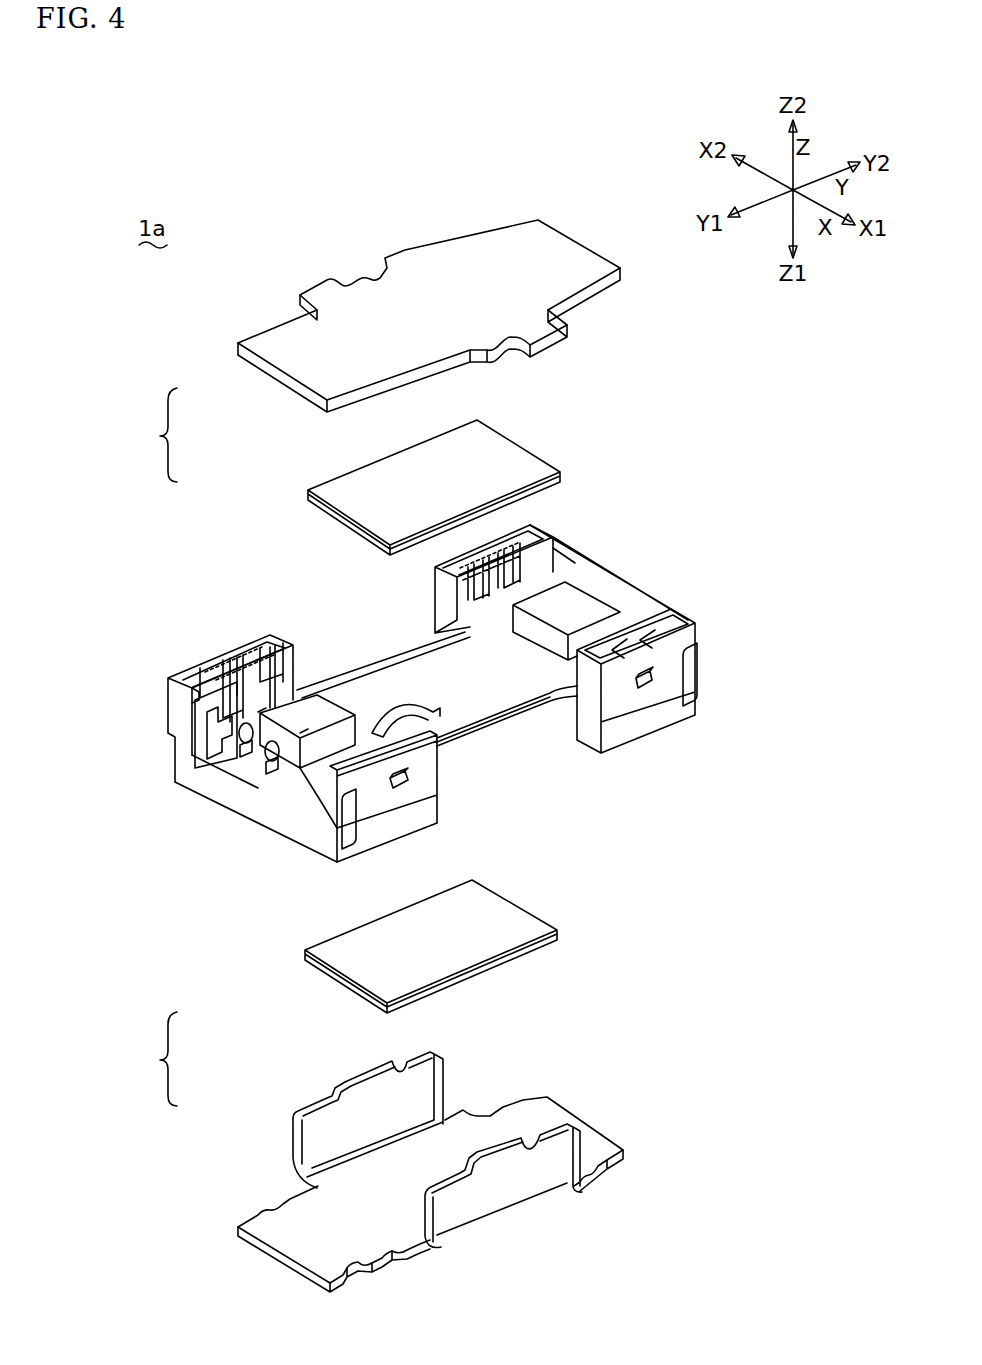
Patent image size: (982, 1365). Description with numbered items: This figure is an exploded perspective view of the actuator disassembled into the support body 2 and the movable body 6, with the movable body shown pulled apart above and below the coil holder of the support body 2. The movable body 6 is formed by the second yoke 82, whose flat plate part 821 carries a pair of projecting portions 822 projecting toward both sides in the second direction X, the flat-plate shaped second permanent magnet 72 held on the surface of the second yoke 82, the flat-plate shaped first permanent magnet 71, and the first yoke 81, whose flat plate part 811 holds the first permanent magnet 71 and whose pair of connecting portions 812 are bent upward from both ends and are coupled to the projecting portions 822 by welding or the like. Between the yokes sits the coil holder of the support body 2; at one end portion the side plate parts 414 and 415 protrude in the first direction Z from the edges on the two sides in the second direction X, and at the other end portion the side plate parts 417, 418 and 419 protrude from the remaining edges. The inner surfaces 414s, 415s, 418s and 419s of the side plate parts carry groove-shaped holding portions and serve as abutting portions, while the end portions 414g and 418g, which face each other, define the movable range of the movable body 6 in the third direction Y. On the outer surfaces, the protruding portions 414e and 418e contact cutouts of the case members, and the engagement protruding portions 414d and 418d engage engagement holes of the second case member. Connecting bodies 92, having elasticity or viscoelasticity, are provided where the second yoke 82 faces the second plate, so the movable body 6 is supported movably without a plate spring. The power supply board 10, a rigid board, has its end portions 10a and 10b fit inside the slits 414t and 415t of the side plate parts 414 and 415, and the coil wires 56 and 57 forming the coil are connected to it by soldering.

The support body 2 is at (153, 776).
The movable body 6 is at (159, 747).
The power supply board 10 is at (203, 762).
The end portion of the power supply board 10a is at (320, 740).
The end portion of the power supply board 10b is at (197, 694).
The coil wire 56 is at (270, 762).
The coil wire 57 is at (242, 745).
The first permanent magnet 71 is at (314, 965).
The second permanent magnet 72 is at (307, 498).
The first yoke 81 is at (284, 1198).
The second yoke 82 is at (304, 354).
The connecting body 92 is at (303, 713).
The side plate part 414 is at (442, 823).
The engagement protruding portion 414d is at (400, 795).
The protruding portion 414e is at (350, 846).
The end portion 414g is at (440, 777).
The inner surface 414s is at (467, 737).
The slit 414t is at (323, 808).
The side plate part 415 is at (197, 680).
The inner surface 415s is at (262, 657).
The slit 415t is at (192, 677).
The side plate part 417 is at (597, 567).
The side plate part 418 is at (677, 712).
The engagement protruding portion 418d is at (648, 692).
The protruding portion 418e is at (698, 670).
The end portion 418g is at (587, 732).
The inner surface 418s is at (627, 622).
The side plate part 419 is at (497, 533).
The inner surface 419s is at (513, 565).
The flat plate part 811 is at (400, 1227).
The connecting portion 812 is at (437, 1087).
The flat plate part 821 is at (462, 268).
The projecting portion 822 is at (405, 252).